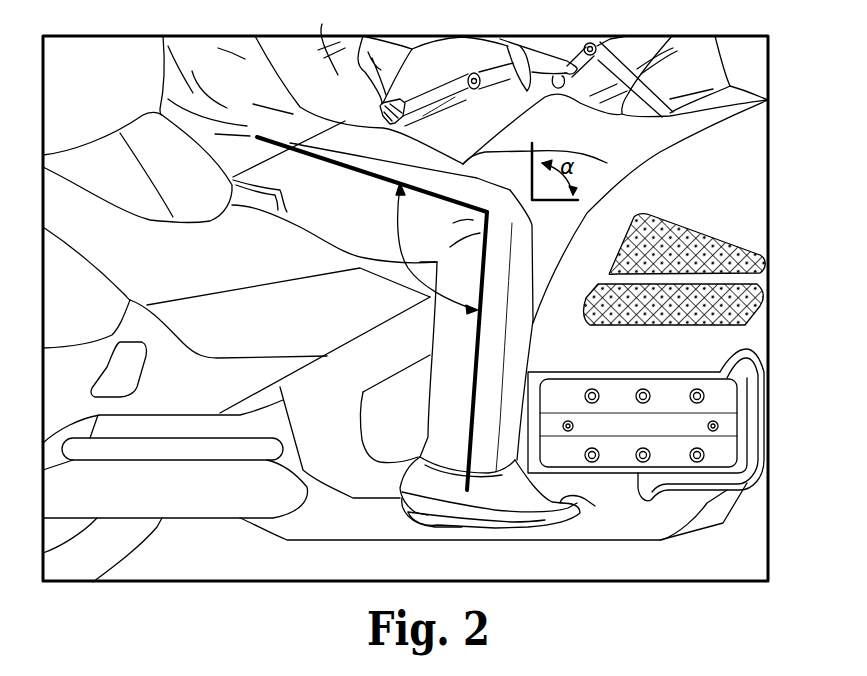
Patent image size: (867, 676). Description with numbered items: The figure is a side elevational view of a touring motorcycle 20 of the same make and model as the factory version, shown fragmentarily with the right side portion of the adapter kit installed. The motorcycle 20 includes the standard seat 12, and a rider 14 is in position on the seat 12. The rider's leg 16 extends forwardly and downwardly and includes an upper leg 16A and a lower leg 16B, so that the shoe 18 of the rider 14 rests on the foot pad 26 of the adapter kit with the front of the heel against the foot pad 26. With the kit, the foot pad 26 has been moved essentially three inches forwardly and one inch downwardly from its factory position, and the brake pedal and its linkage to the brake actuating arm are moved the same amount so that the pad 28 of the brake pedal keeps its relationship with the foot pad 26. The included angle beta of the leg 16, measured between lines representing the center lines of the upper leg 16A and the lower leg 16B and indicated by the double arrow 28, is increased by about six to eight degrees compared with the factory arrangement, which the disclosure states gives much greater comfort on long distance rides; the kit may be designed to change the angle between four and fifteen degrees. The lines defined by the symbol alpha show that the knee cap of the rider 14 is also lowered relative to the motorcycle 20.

The seat 12 is at (233, 275).
The rider 14 is at (368, 82).
The leg 16 is at (448, 292).
The upper leg 16A is at (553, 136).
The lower leg 16B is at (493, 350).
The shoe 18 is at (508, 505).
The motorcycle 20 is at (727, 192).
The foot pad 26 is at (430, 527).
The double arrow / pad of brake pedal 28 is at (400, 240).